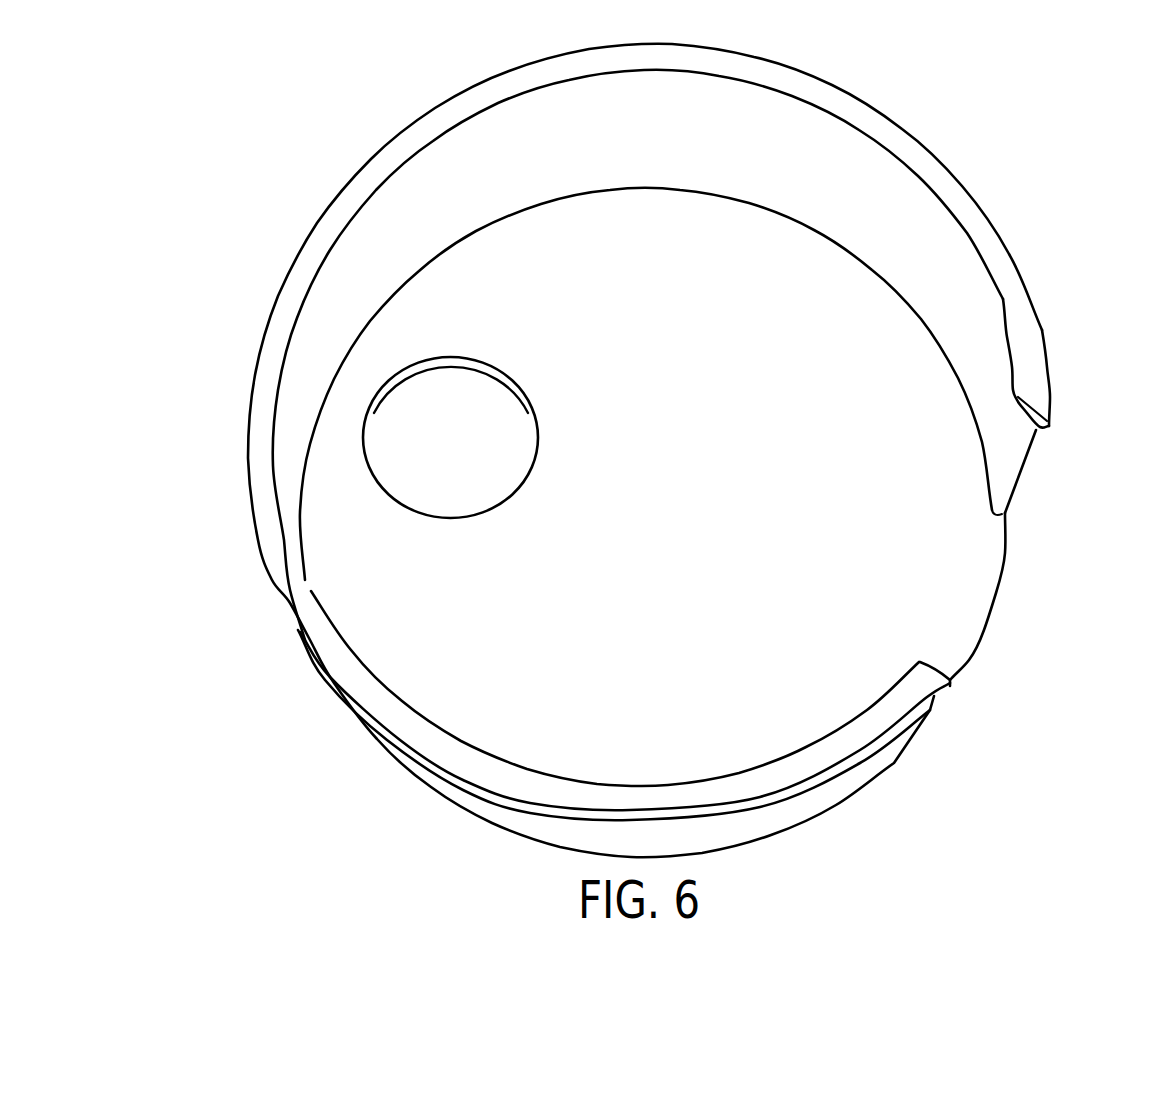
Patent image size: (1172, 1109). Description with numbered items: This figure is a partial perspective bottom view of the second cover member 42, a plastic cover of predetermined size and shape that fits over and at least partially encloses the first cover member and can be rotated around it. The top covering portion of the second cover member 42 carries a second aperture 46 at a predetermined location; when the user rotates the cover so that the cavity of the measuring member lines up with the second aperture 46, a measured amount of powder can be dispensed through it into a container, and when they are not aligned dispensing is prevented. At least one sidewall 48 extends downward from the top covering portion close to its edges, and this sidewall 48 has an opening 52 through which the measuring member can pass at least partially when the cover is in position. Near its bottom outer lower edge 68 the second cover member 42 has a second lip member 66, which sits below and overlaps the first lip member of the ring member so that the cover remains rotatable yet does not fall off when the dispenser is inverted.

The second cover member 42 is at (897, 762).
The second aperture 46 is at (460, 422).
The sidewall 48 is at (387, 733).
The opening 52 is at (1007, 543).
The second lip member 66 is at (1040, 403).
The bottom outer lower edge 68 is at (1037, 432).